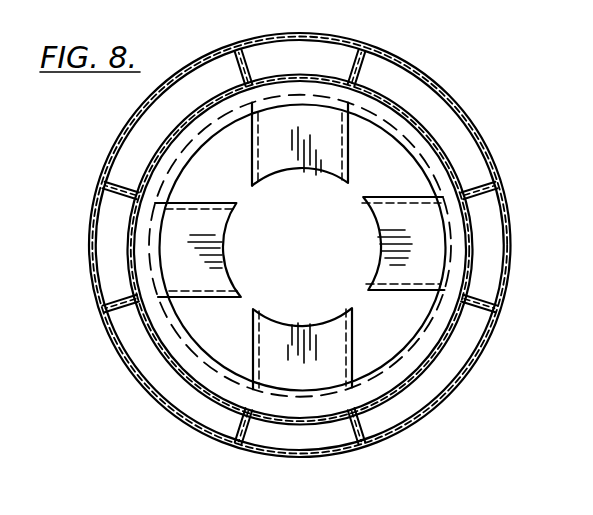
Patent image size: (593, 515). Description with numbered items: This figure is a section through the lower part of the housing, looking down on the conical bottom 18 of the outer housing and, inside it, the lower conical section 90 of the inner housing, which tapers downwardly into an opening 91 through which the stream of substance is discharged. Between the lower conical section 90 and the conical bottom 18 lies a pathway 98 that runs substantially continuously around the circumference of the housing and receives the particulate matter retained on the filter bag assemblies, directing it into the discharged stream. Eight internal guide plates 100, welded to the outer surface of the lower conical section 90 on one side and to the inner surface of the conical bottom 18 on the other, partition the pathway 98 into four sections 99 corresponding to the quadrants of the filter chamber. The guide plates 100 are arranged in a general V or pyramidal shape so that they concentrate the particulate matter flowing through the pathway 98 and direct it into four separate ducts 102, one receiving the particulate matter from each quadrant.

The conical bottom 18 is at (466, 376).
The lower conical section 90 is at (185, 378).
The opening 91 is at (393, 166).
The pathway 98 is at (368, 72).
The sections 99 is at (490, 247).
The internal guide plates 100 is at (355, 69).
The ducts 102 is at (252, 128).